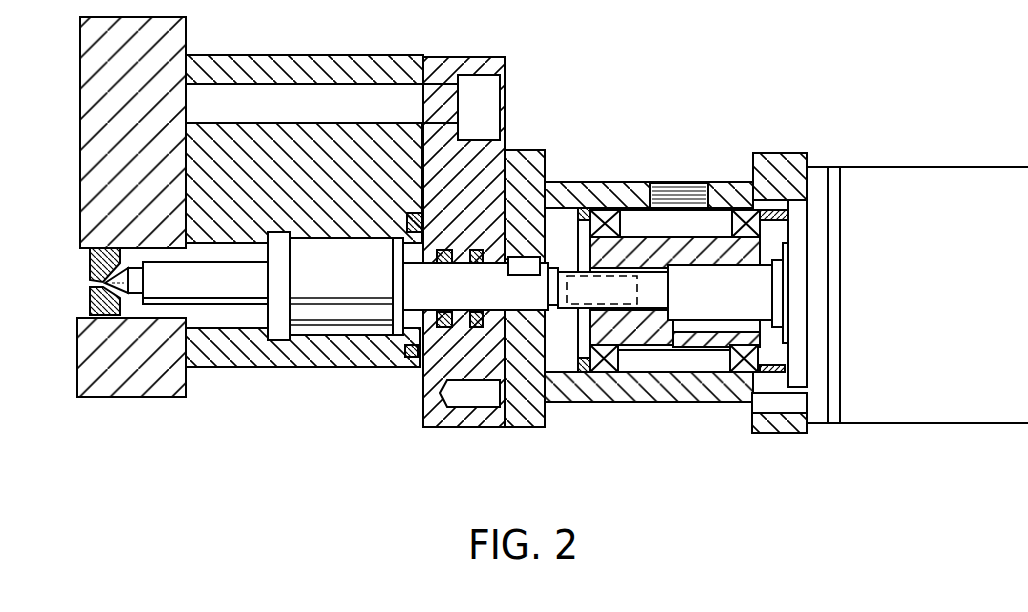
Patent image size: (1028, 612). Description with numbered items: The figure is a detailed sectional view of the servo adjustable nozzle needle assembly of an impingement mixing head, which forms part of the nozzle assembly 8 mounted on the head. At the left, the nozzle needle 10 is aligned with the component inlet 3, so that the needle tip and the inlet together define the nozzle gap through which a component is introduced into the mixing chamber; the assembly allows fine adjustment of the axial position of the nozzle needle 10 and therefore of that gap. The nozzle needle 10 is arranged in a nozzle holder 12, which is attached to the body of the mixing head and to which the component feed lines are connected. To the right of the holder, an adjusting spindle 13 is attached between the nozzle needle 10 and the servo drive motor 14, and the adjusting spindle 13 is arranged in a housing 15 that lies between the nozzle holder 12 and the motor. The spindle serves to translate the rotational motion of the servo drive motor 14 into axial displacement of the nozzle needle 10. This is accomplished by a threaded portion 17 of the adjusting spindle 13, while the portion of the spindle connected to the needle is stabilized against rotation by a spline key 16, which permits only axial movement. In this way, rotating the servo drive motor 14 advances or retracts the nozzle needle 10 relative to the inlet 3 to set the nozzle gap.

The inlet port 3 is at (79, 273).
The nozzle assembly 8 is at (272, 55).
The nozzle needle 10 is at (213, 298).
The nozzle holder 12 is at (314, 188).
The adjusting spindle 13 is at (642, 225).
The servo drive motor 14 is at (870, 187).
The housing 15 is at (663, 402).
The spline key 16 is at (507, 272).
The threaded portion 17 is at (600, 300).